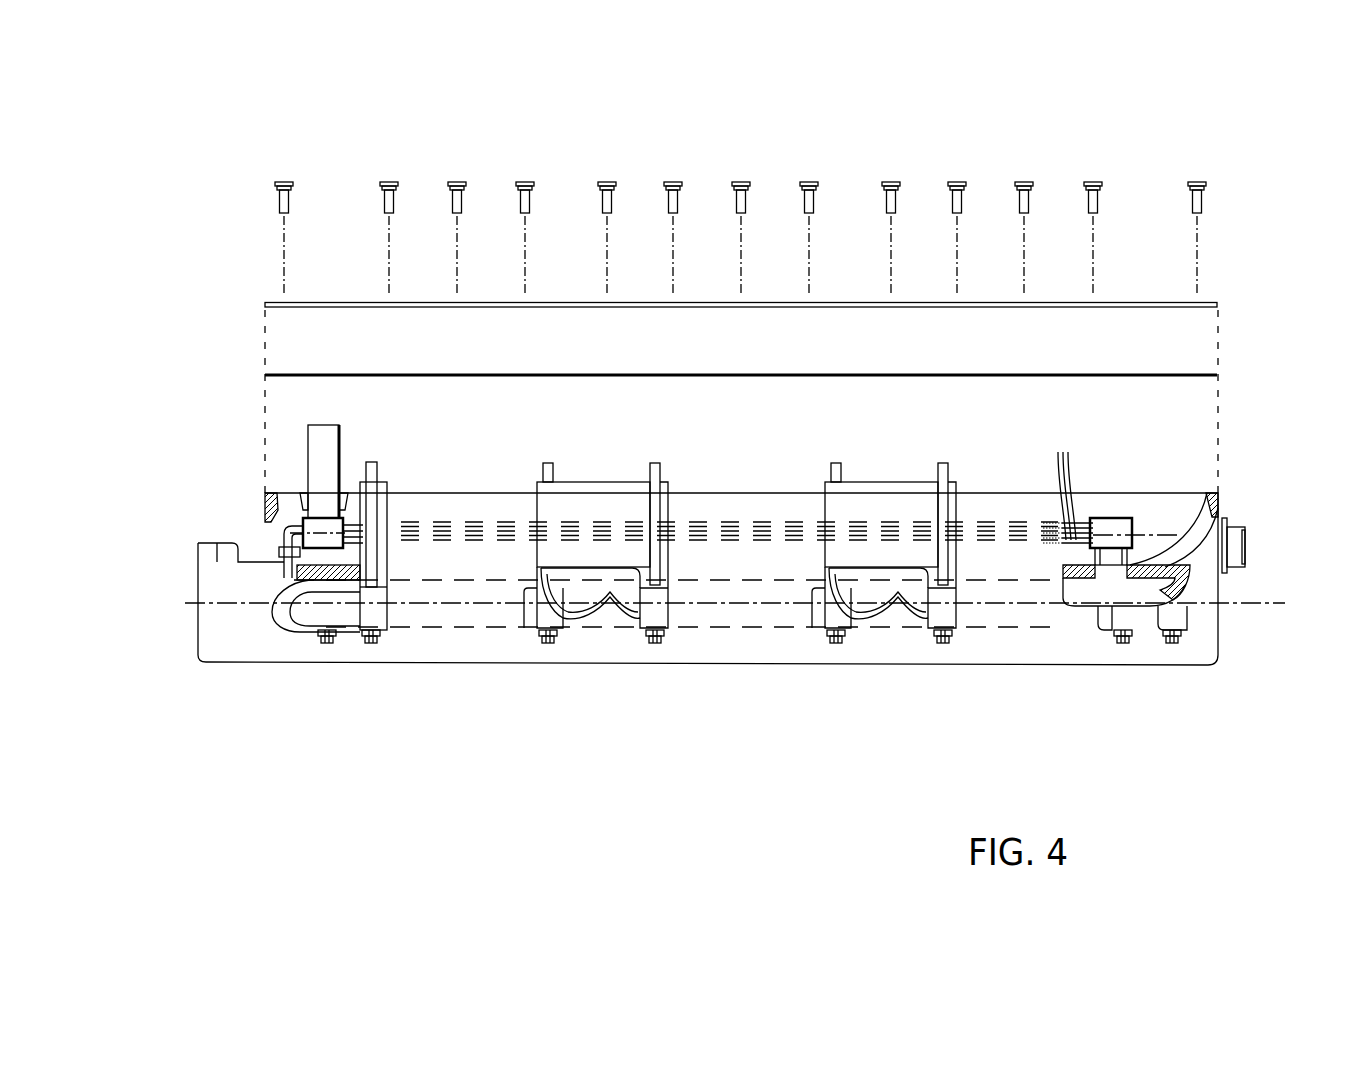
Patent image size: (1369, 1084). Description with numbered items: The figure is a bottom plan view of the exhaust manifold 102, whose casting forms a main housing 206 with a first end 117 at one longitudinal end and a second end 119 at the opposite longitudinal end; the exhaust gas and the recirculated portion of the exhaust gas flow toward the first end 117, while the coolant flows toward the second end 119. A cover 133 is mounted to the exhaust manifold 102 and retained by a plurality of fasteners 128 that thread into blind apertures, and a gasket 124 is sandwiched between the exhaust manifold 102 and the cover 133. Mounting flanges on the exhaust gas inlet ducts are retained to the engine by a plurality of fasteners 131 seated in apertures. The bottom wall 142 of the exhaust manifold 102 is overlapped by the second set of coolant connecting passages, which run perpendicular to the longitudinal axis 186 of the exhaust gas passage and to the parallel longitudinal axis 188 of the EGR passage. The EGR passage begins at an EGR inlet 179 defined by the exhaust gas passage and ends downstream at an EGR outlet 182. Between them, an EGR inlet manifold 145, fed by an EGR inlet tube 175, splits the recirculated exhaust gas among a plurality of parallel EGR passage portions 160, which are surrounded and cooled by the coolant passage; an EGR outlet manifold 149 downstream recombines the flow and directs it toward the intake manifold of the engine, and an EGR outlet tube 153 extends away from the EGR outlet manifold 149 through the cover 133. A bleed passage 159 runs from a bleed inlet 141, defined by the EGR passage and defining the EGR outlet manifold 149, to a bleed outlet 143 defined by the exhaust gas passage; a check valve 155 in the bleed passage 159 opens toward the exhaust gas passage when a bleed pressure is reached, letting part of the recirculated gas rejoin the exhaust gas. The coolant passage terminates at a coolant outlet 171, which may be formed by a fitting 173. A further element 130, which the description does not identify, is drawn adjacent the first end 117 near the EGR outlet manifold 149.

The exhaust manifold 102 is at (668, 829).
The first end 117 is at (202, 663).
The second end 119 is at (1207, 667).
The gasket 124 is at (995, 377).
The fasteners 128 is at (607, 178).
The end wall seal 130 is at (299, 495).
The fasteners 131 is at (1183, 725).
The cover 133 is at (793, 308).
The bleed inlet 141 is at (300, 525).
The bottom wall 142 is at (762, 657).
The bleed outlet 143 is at (279, 583).
The EGR inlet manifold 145 is at (1108, 517).
The EGR outlet manifold 149 is at (285, 590).
The EGR outlet tube 153 is at (340, 445).
The check valve 155 is at (281, 562).
The bleed passage 159 is at (287, 548).
The EGR passage portions 160 is at (1068, 489).
The coolant outlet 171 is at (1246, 535).
The fitting 173 is at (1225, 520).
The EGR inlet tube 175 is at (1207, 493).
The EGR inlet 179 is at (1190, 574).
The EGR outlet 182 is at (413, 495).
The longitudinal axis of the exhaust gas passage 186 is at (1253, 607).
The longitudinal axis of the EGR passage 188 is at (1163, 532).
The main housing 206 is at (149, 634).